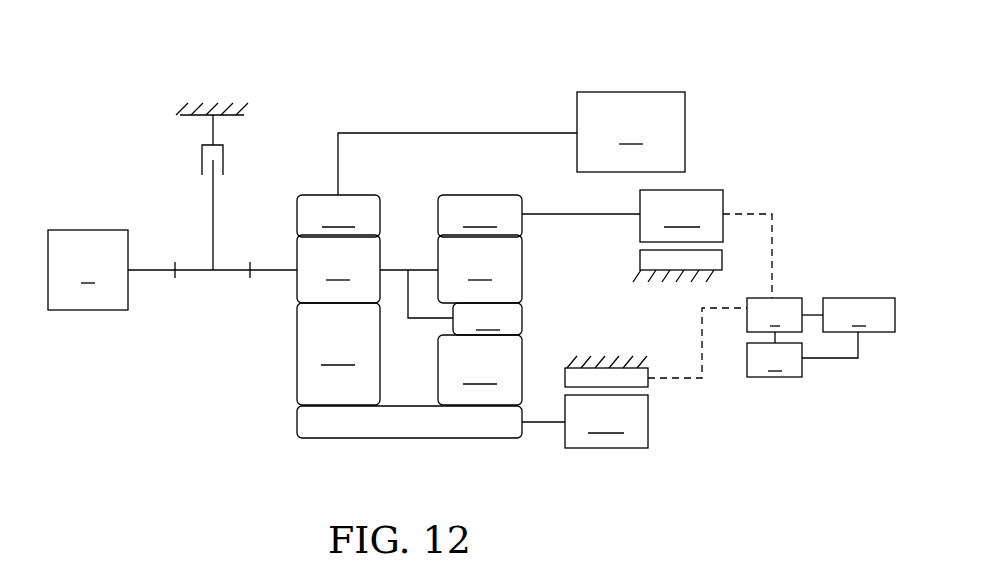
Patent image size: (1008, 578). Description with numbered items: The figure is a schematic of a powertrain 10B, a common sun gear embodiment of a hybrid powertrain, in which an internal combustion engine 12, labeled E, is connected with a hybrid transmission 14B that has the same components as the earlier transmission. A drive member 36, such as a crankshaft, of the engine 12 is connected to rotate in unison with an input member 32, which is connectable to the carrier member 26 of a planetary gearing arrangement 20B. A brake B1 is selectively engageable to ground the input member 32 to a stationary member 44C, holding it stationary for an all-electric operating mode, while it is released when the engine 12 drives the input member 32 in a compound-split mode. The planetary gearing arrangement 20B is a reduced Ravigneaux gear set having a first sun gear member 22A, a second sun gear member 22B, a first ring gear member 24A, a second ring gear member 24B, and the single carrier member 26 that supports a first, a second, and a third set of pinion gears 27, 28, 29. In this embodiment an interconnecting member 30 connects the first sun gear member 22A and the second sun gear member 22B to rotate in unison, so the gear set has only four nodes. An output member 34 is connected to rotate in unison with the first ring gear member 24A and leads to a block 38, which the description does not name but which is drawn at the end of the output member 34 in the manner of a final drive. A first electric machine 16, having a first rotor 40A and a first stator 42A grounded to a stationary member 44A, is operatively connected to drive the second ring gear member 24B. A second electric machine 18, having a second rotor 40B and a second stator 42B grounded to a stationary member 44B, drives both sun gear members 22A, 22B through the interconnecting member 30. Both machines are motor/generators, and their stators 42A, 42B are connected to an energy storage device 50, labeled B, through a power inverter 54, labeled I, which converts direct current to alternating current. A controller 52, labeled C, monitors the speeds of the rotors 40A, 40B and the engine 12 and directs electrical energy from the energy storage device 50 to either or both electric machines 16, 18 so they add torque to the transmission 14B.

The internal combustion engine 12 is at (90, 230).
The drive member 36 is at (152, 271).
The carrier member 26 is at (277, 271).
The input member 32 is at (228, 268).
The brake B1 is at (202, 186).
The stationary member 44C is at (186, 113).
The powertrain 10B is at (288, 100).
The planetary gearing arrangement 20B is at (310, 174).
The first ring gear member 24A is at (338, 216).
The first set of pinion gears 27 is at (338, 269).
The first sun gear member 22A is at (338, 354).
The second ring gear member 24B is at (480, 216).
The second set of pinion gears 28 is at (480, 269).
The third set of pinion gears 29 is at (487, 319).
The second sun gear member 22B is at (480, 370).
The interconnecting member 30 is at (415, 440).
The hybrid transmission 14B is at (277, 389).
The output member 34 is at (440, 132).
The energy storage device 38 is at (631, 132).
The first rotor 40A is at (647, 244).
The first electric machine 16 is at (748, 198).
The first stator 42A is at (639, 262).
The stationary member 44A is at (638, 277).
The second stator 42B is at (565, 378).
The stationary member 44B is at (641, 362).
The second rotor 40B is at (585, 421).
The second electric machine 18 is at (666, 424).
The power inverter 54 is at (783, 298).
The energy storage device 50 is at (875, 298).
The controller 52 is at (776, 378).